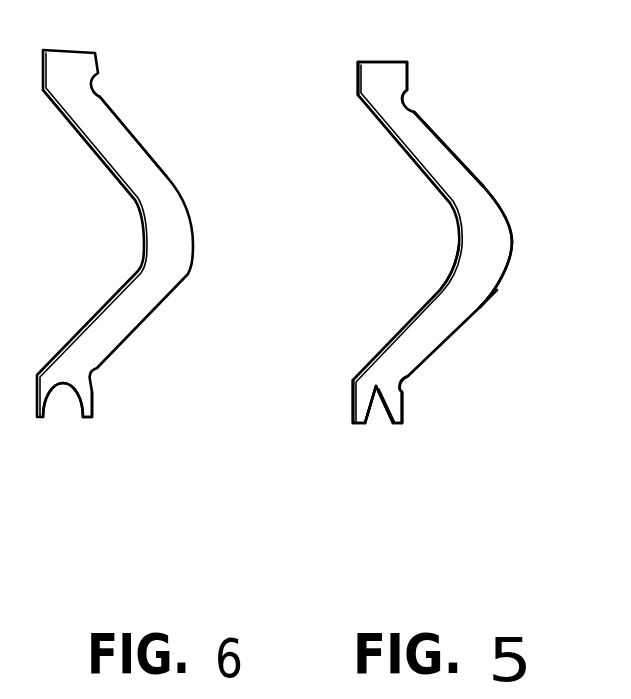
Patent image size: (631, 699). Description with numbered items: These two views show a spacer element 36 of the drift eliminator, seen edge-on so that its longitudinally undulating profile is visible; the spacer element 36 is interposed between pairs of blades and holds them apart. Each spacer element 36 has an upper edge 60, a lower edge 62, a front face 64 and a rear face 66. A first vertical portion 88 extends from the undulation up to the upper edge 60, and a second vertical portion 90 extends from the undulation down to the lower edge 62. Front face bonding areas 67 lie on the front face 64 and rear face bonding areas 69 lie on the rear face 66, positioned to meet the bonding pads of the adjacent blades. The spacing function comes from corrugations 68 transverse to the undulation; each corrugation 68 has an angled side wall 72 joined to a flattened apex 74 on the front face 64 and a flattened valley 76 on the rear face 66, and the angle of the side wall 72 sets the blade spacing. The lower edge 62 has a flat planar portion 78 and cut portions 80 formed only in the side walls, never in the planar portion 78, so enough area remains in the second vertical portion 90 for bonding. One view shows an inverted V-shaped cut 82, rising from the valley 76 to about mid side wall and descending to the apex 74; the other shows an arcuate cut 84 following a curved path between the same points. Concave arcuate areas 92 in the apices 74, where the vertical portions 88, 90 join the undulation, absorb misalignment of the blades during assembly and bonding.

In FIG. 6, the spacer element 36 is at (160, 101).
In FIG. 5, the spacer element 36 is at (352, 235).
In FIG. 5, the upper edge 60 is at (373, 62).
In FIG. 5, the lower edge 62 is at (400, 423).
In FIG. 6, the front face 64 is at (167, 177).
In FIG. 5, the front face 64 is at (460, 163).
In FIG. 6, the rear face 66 is at (100, 157).
In FIG. 5, the rear face 66 is at (417, 168).
In FIG. 5, the front face bonding areas 67 is at (410, 78).
In FIG. 5, the corrugations 68 is at (483, 203).
In FIG. 5, the rear face bonding areas 69 is at (357, 88).
In FIG. 5, the side wall 72 is at (472, 285).
In FIG. 5, the flattened apex 74 is at (512, 250).
In FIG. 5, the flattened valley 76 is at (457, 268).
In FIG. 5, the flat planar portion 78 is at (367, 425).
In FIG. 6, the cut portions 80 is at (58, 417).
In FIG. 5, the cut portions 80 is at (379, 425).
In FIG. 5, the inverted V-shaped cut 82 is at (367, 427).
In FIG. 6, the arcuate cut 84 is at (73, 412).
In FIG. 5, the first vertical portion 88 is at (357, 95).
In FIG. 5, the second vertical portion 90 is at (350, 395).
In FIG. 5, the concave arcuate areas 92 is at (407, 100).